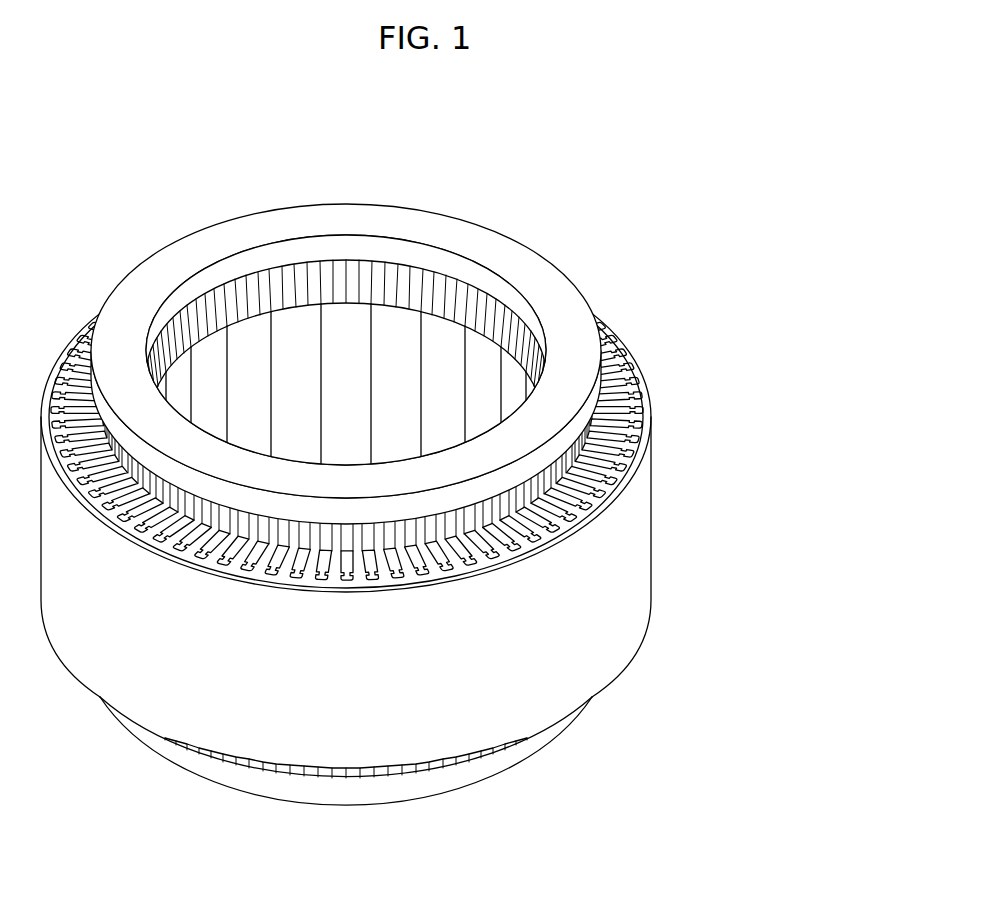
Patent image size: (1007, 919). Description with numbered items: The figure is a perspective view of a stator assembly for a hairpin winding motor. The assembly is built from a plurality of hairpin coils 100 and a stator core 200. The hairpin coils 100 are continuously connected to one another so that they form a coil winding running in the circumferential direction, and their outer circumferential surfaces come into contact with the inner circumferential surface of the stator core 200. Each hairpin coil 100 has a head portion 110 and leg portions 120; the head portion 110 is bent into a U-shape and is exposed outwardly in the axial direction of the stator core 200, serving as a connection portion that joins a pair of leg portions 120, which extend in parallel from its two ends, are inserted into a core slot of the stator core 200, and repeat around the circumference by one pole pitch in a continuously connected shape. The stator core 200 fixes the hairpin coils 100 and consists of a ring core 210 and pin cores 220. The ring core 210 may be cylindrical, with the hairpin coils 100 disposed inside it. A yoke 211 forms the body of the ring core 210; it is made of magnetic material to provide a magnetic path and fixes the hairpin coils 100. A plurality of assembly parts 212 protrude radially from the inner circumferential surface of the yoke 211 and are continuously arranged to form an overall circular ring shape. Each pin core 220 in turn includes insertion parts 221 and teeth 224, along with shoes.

The hairpin coil 100 is at (346, 351).
The head portion 110 is at (170, 258).
The leg portions 120 is at (238, 305).
The stator core 200 is at (450, 558).
The ring core 210 is at (410, 523).
The yoke 211 is at (600, 620).
The assembly parts 212 is at (470, 555).
The pin core 220 is at (408, 558).
The insertion parts 221 is at (347, 565).
The teeth 224 is at (323, 565).